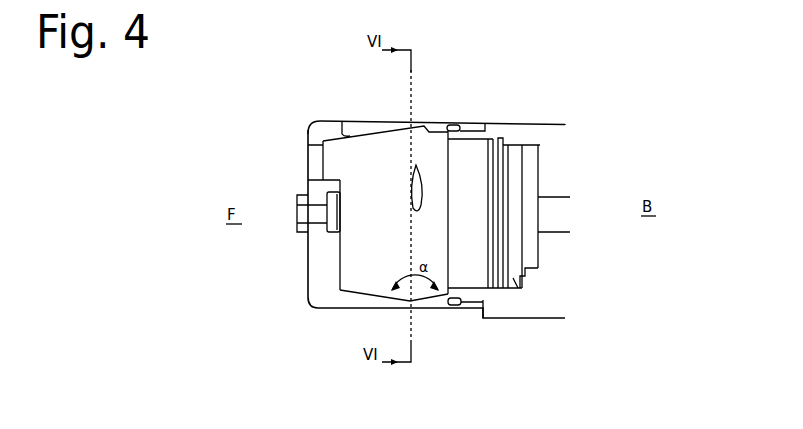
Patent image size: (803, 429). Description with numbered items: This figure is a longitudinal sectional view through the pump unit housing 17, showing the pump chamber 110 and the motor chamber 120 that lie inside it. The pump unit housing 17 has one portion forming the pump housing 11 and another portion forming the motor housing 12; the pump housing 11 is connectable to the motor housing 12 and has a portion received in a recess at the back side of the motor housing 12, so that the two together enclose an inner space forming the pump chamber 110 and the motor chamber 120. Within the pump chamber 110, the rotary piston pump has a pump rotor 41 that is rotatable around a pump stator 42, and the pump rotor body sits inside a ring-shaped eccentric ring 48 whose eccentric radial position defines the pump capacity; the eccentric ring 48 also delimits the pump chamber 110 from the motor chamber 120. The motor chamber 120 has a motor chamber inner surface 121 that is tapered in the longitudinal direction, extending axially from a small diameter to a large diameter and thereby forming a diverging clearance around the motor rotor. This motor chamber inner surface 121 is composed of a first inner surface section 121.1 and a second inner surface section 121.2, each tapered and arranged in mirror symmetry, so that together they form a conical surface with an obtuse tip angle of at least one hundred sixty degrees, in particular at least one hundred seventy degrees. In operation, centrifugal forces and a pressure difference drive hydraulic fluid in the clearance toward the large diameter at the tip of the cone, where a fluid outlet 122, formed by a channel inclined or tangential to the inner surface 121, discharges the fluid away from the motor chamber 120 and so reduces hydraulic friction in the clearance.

The pump housing 11 is at (555, 137).
The motor housing 12 is at (365, 123).
The pump unit housing 17 is at (291, 133).
The pump rotor 41 is at (540, 268).
The pump stator 42 is at (548, 197).
The eccentric ring 48 is at (508, 313).
The pump chamber 110 is at (513, 150).
The motor chamber 120 is at (392, 156).
The motor chamber inner surface 121 is at (367, 297).
The first inner surface section 121.1 is at (342, 121).
The second inner surface section 121.2 is at (422, 124).
The fluid outlet 122 is at (412, 187).